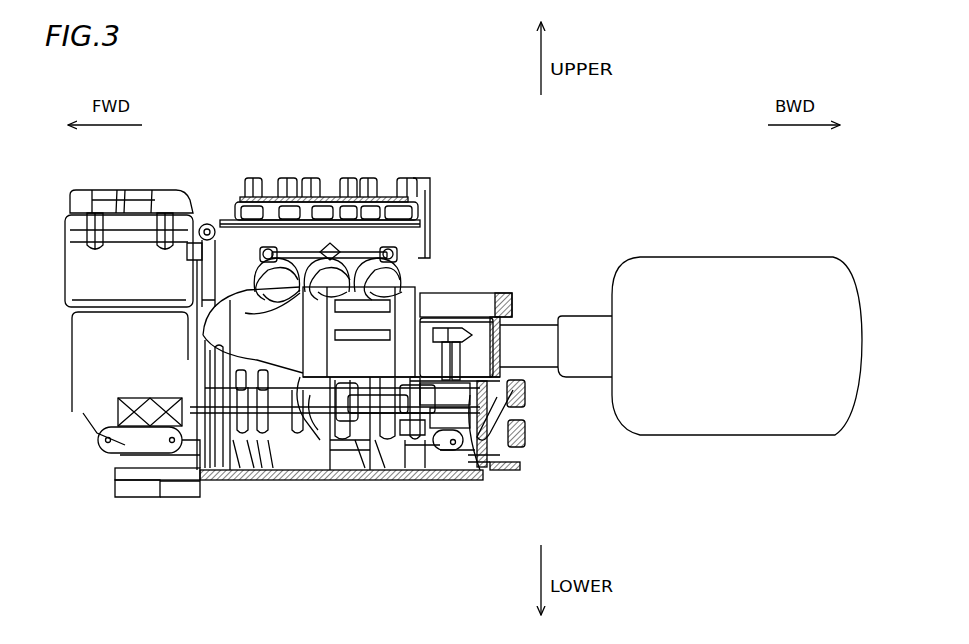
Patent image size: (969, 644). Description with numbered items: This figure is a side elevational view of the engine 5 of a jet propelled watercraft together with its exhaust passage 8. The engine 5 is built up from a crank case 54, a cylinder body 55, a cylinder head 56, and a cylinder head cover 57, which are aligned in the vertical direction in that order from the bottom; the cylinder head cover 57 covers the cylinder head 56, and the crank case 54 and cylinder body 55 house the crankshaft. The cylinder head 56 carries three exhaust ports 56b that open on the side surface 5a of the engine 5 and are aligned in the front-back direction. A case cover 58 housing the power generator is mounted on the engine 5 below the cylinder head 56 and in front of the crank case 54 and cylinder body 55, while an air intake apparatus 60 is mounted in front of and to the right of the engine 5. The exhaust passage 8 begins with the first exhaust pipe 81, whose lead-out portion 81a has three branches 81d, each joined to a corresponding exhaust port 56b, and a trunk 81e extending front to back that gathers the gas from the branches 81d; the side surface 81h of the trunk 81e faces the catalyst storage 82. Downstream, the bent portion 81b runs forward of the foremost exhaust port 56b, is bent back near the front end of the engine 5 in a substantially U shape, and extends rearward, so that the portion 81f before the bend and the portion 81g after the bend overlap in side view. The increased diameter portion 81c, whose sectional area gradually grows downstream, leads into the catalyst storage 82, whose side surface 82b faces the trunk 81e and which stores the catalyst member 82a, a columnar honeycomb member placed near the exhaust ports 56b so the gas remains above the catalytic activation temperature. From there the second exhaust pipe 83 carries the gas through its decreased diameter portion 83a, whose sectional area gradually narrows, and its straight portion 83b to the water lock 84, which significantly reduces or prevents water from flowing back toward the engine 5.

The engine 5 is at (447, 169).
The side surface 5a is at (425, 200).
The exhaust passage 8 is at (553, 399).
The crank case 54 is at (495, 473).
The cylinder body 55 is at (488, 295).
The cylinder head 56 is at (440, 245).
The exhaust ports 56b is at (280, 200).
The cylinder head cover 57 is at (440, 203).
The case cover 58 is at (180, 484).
The air intake apparatus 60 is at (152, 176).
The first exhaust pipe 81 is at (229, 283).
The lead-out portion 81a is at (298, 248).
The bent portion 81b is at (228, 483).
The increased diameter portion 81c is at (282, 483).
The branches 81d is at (258, 186).
The trunk 81e is at (357, 250).
The portion of the bent portion before being bent 81f is at (248, 250).
The portion of the bent portion after being bent 81g is at (250, 483).
The side surface of the trunk 81h is at (395, 288).
The catalyst storage 82 is at (342, 483).
The catalyst member 82a is at (370, 483).
The side surface of the catalyst storage 82b is at (313, 483).
The second exhaust pipe 83 is at (445, 483).
The decreased diameter portion 83a is at (413, 483).
The straight portion 83b is at (485, 483).
The water lock 84 is at (673, 279).